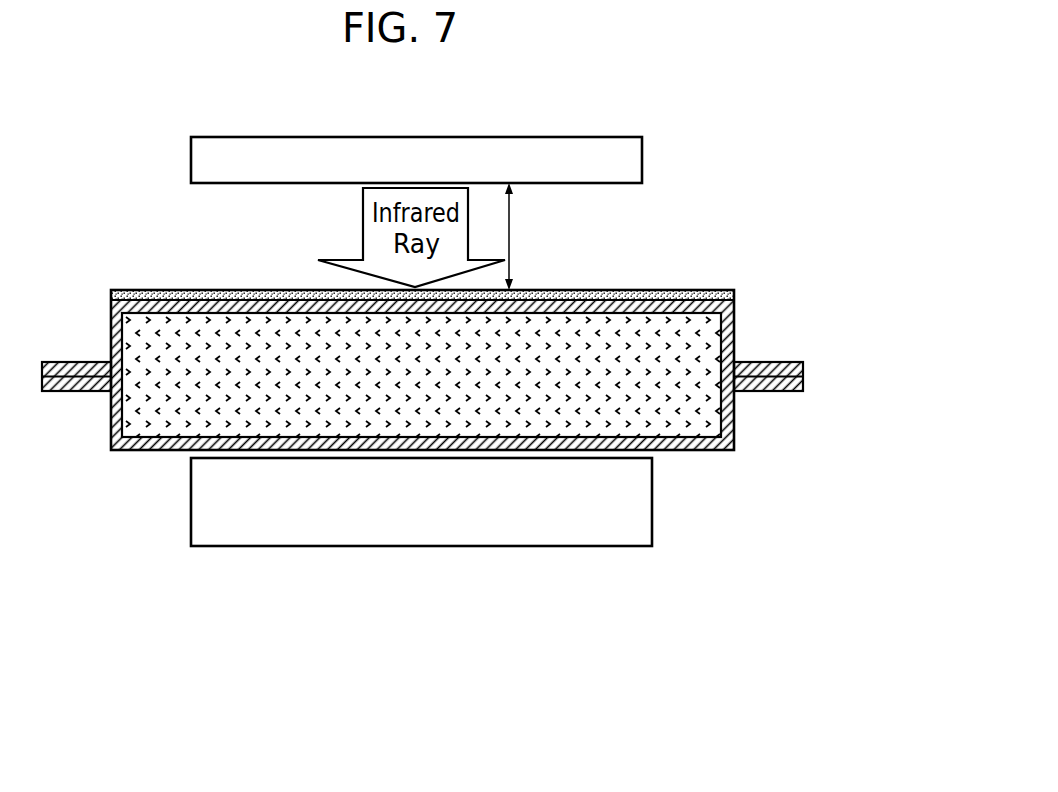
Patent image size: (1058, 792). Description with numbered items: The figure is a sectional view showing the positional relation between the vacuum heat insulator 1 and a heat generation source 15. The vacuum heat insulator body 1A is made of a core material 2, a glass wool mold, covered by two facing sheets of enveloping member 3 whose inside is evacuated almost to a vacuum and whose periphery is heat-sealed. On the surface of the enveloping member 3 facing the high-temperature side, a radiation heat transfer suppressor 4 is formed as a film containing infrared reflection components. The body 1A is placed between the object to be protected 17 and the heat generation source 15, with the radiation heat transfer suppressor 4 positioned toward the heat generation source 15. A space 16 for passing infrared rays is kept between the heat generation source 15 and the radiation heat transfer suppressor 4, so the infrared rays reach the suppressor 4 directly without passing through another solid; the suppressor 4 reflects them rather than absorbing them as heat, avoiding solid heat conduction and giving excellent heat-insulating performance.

The vacuum heat insulator 1 is at (434, 360).
The vacuum heat insulator body 1A is at (138, 448).
The core material 2 is at (697, 417).
The enveloping member 3 is at (734, 332).
The radiation heat transfer suppressor 4 is at (653, 292).
The heat generation source 15 is at (635, 160).
The space 16 is at (512, 245).
The object to be protected 17 is at (628, 492).